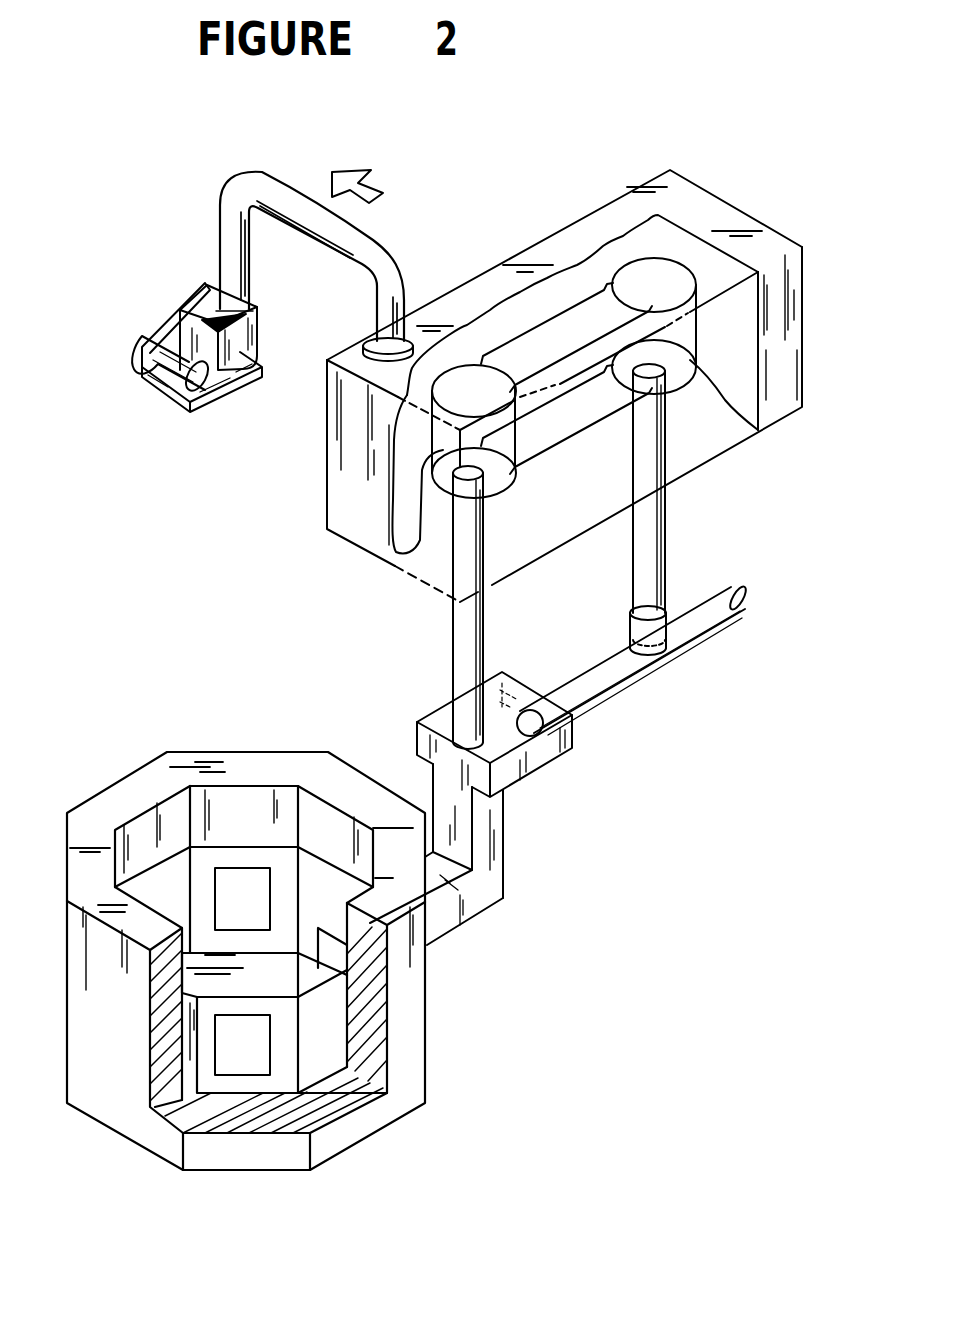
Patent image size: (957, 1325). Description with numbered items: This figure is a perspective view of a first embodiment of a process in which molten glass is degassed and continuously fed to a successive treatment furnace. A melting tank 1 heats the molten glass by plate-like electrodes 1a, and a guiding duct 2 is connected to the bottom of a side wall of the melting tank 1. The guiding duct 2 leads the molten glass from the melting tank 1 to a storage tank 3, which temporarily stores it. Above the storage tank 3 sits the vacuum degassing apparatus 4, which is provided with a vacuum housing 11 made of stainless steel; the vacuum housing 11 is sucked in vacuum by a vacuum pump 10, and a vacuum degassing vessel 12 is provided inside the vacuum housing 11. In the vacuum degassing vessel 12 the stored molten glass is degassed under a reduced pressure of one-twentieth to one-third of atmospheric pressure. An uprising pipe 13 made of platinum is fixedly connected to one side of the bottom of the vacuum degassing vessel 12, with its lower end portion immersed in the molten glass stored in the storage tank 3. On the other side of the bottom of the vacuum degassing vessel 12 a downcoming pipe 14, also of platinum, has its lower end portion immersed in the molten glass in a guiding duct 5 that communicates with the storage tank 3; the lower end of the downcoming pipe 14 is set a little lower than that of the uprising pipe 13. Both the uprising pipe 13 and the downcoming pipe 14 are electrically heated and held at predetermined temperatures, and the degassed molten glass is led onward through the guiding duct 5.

The melting tank 1 is at (413, 1038).
The plate-like electrodes 1a is at (245, 890).
The guiding duct 2 is at (475, 898).
The storage tank 3 is at (542, 758).
The vacuum degassing apparatus 4 is at (760, 218).
The guiding duct 5 is at (618, 681).
The vacuum pump 10 is at (233, 368).
The vacuum housing 11 is at (548, 236).
The vacuum degassing vessel 12 is at (525, 330).
The uprising pipe 13 is at (453, 660).
The downcoming pipe 14 is at (637, 578).